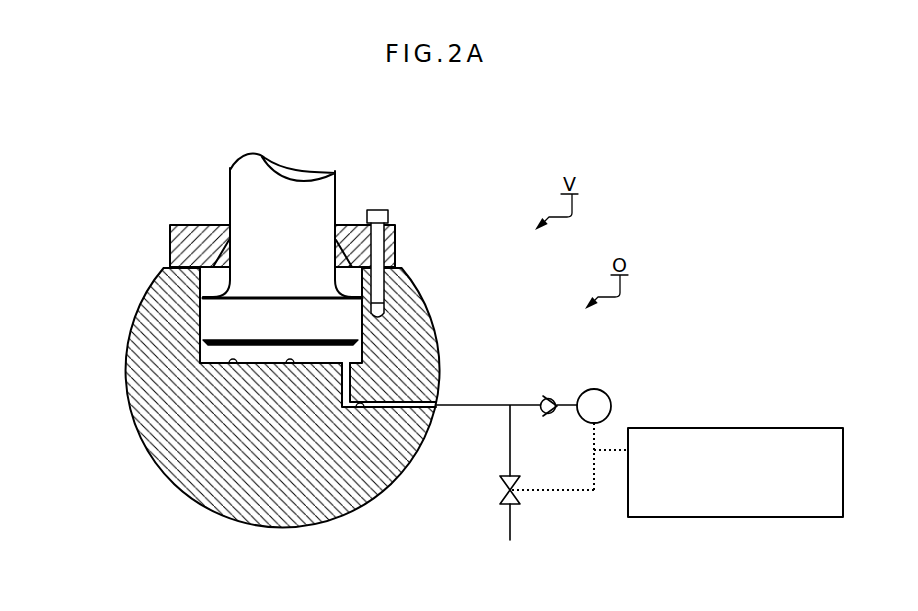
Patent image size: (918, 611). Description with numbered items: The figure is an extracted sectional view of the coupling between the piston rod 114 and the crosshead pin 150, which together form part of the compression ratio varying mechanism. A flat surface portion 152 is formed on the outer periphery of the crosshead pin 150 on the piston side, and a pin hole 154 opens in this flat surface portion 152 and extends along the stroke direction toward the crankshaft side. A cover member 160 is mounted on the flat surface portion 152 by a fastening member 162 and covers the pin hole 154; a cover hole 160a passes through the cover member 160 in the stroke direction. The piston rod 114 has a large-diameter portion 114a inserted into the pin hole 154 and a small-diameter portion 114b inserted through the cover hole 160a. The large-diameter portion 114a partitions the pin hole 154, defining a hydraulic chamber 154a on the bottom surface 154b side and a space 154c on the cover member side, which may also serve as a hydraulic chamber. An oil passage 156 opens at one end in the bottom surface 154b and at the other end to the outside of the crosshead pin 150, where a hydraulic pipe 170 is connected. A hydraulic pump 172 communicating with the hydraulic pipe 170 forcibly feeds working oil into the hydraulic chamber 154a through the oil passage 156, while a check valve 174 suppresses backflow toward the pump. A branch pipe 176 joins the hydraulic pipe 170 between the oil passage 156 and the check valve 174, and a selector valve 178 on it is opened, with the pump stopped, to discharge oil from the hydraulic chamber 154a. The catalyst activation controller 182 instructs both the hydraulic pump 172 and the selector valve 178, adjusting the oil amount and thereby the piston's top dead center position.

The piston rod 114 is at (228, 176).
The large-diameter portion 114a is at (223, 322).
The small-diameter portion 114b is at (267, 192).
The crosshead pin 150 is at (134, 424).
The flat surface portion 152 is at (172, 257).
The pin hole 154 is at (207, 350).
The hydraulic chamber 154a is at (290, 363).
The bottom surface 154b is at (233, 363).
The space 154c is at (210, 287).
The oil passage 156 is at (361, 408).
The cover member 160 is at (170, 227).
The cover hole 160a is at (331, 251).
The fastening member 162 is at (380, 210).
The hydraulic pipe 170 is at (500, 405).
The hydraulic pump 172 is at (600, 390).
The check valve 174 is at (553, 398).
The branch pipe 176 is at (510, 447).
The selector valve 178 is at (503, 505).
The catalyst activation controller 182 is at (800, 428).